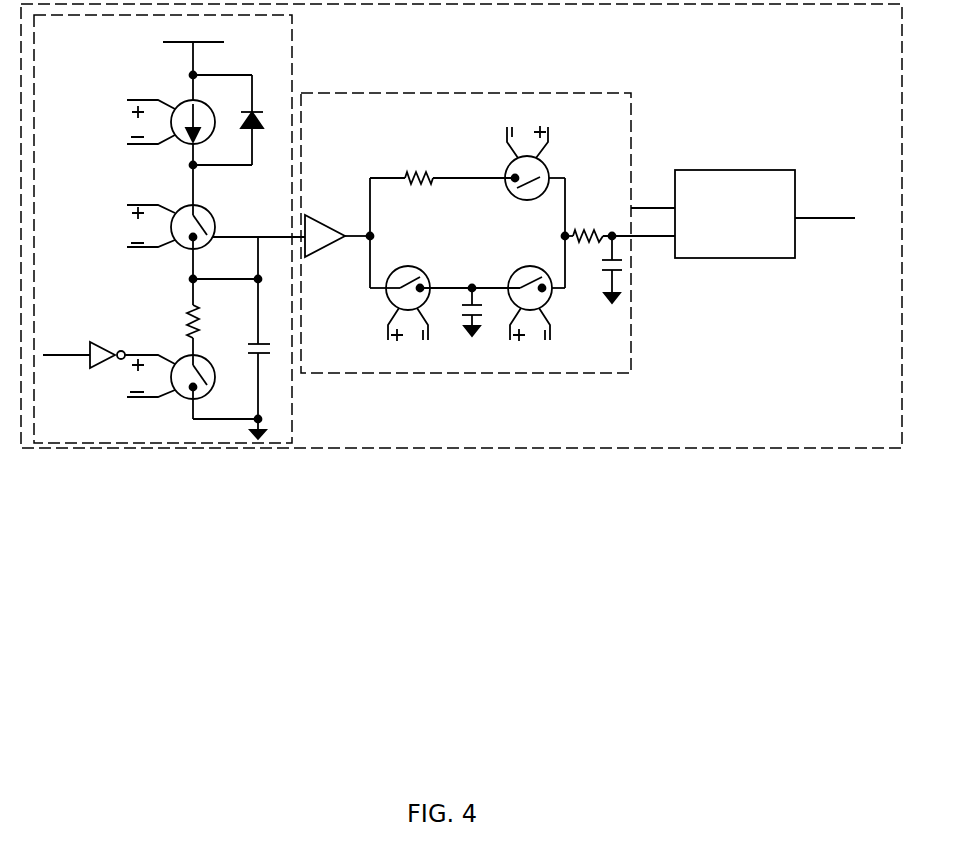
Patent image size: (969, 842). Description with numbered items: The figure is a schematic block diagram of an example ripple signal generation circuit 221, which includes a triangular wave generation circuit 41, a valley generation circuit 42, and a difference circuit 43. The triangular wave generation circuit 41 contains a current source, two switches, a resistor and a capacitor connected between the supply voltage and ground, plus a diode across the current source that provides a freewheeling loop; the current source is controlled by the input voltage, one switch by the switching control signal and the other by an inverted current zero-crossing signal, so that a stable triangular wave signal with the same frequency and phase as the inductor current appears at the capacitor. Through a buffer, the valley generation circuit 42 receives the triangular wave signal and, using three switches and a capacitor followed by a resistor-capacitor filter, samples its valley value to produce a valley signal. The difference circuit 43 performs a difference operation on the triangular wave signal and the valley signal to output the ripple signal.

The ripple signal generation circuit 221 is at (871, 44).
The triangular wave generation circuit 41 is at (291, 41).
The valley generation circuit 42 is at (568, 93).
The difference circuit 43 is at (748, 256).